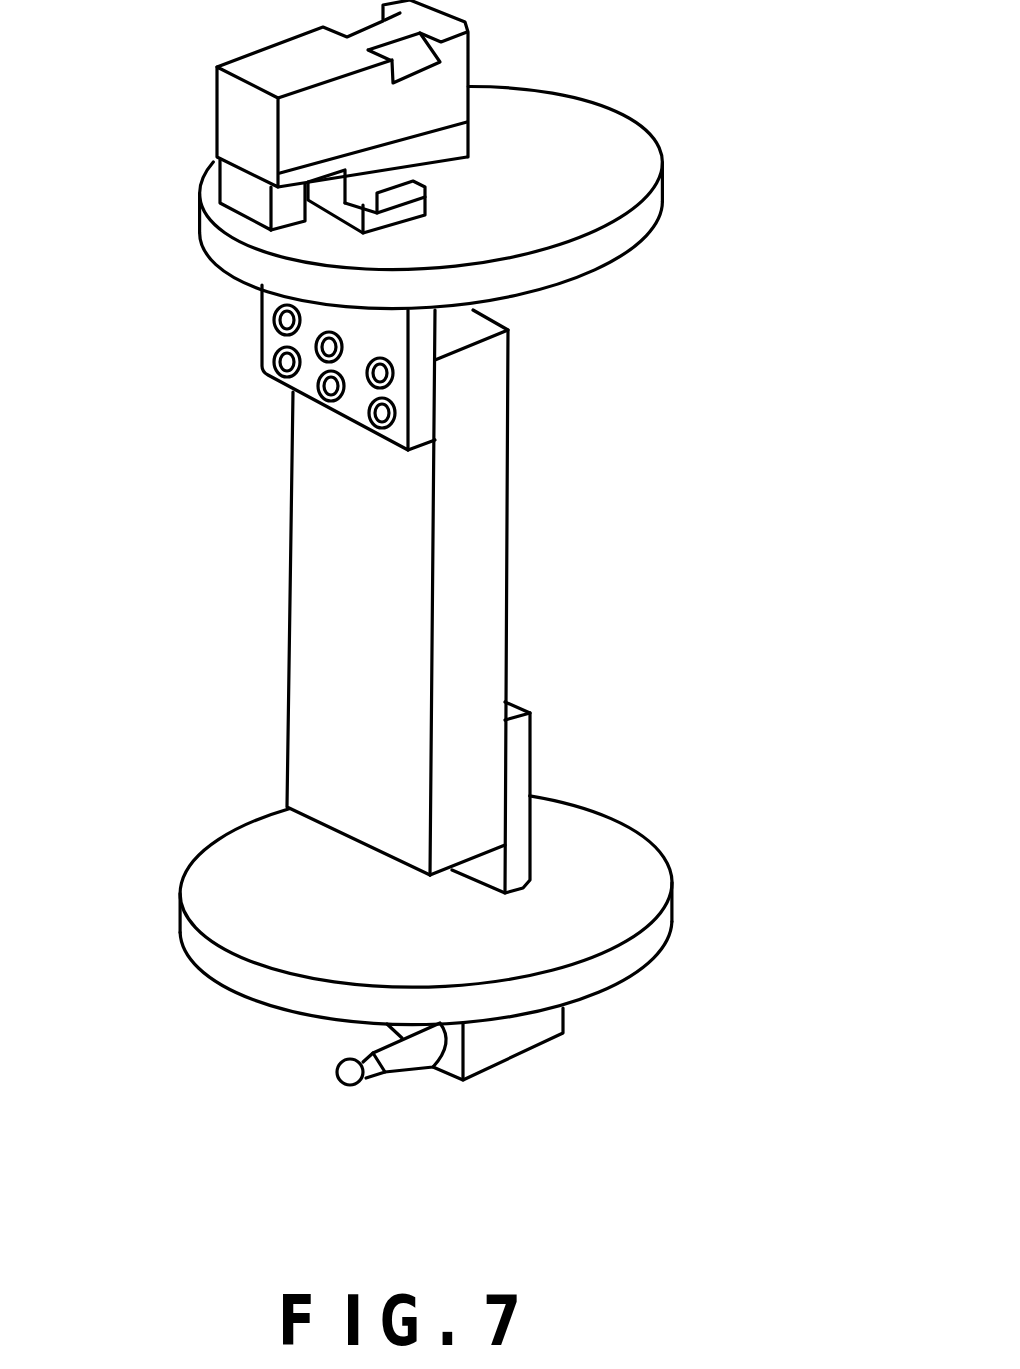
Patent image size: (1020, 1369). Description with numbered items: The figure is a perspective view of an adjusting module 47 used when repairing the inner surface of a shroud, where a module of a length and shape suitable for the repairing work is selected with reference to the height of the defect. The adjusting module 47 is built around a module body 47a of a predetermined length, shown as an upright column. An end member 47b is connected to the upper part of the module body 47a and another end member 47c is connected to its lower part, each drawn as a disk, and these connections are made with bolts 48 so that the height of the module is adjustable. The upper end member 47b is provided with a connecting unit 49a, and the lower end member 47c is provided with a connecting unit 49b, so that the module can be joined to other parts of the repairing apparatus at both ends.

The adjusting module 47 is at (514, 522).
The module body 47a is at (302, 579).
The end member 47b is at (630, 165).
The end member 47c is at (645, 877).
The bolts 48 is at (332, 398).
The connecting unit 49a is at (230, 108).
The connecting unit 49b is at (340, 1081).